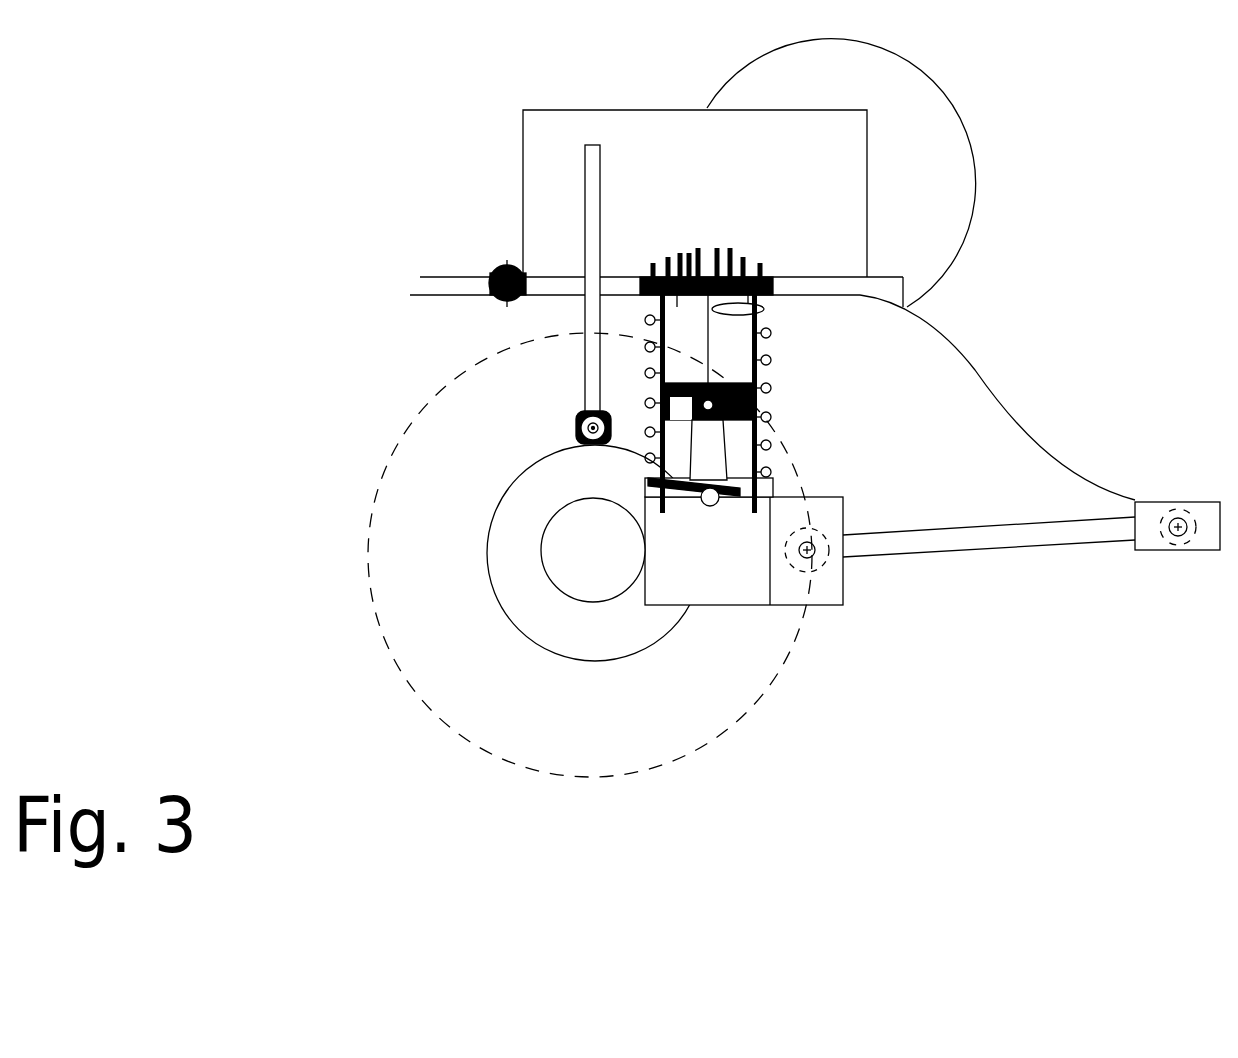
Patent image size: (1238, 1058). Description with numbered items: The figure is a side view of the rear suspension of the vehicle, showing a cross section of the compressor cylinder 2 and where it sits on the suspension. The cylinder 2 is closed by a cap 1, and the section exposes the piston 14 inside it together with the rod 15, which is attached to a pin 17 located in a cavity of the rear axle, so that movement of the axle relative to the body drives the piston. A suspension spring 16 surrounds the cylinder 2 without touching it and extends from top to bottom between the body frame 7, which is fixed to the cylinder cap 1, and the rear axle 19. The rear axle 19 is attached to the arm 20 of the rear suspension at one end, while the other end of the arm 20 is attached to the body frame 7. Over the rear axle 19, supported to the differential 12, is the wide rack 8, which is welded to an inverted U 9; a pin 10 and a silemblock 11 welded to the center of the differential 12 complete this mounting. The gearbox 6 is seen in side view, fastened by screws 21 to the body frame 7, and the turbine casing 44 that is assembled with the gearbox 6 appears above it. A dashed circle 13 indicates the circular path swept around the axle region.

The cap 1 is at (735, 255).
The compressor cylinder 2 is at (759, 352).
The gearbox 6 is at (560, 138).
The body frame 7 is at (866, 296).
The wide rack 8 is at (590, 205).
The inverted U 9 is at (581, 418).
The pin 10 is at (588, 412).
The silemblock 11 is at (604, 414).
The differential 12 is at (567, 460).
The rotation path circle 13 is at (425, 490).
The piston 14 is at (740, 410).
The rod 15 is at (709, 455).
The suspension spring 16 is at (772, 362).
The pin 17 is at (716, 506).
The rear axle 19 is at (580, 532).
The arm 20 is at (990, 545).
The screws 21 is at (498, 273).
The turbine casing 44 is at (910, 143).